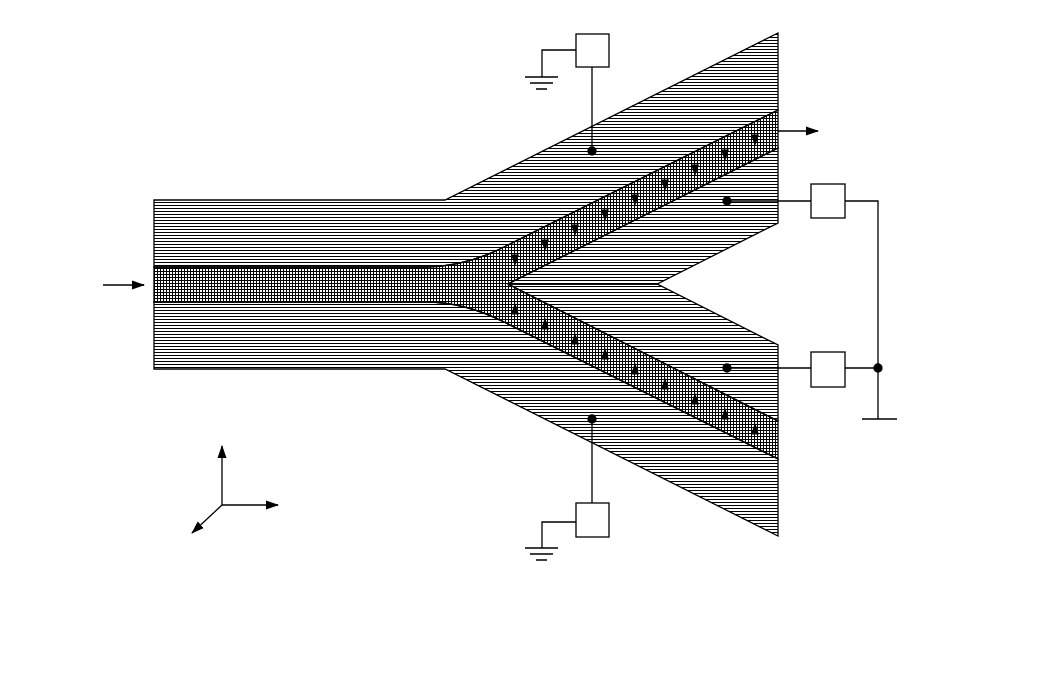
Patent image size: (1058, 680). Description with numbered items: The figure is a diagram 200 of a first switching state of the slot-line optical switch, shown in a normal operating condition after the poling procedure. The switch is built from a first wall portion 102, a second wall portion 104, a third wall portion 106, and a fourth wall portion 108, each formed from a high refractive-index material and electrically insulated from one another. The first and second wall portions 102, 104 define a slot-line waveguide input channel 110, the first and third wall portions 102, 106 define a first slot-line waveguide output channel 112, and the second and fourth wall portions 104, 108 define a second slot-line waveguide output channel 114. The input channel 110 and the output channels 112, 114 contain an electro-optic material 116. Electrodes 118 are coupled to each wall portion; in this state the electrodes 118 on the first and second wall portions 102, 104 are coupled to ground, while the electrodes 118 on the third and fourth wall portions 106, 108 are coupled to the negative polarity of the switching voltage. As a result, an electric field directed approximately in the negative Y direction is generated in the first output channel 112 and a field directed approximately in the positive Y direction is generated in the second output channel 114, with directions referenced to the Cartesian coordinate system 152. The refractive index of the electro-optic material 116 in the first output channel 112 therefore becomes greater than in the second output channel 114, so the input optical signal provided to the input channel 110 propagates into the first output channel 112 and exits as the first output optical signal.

The diagram 200 is at (116, 79).
The slot-line waveguide input channel 110 is at (322, 164).
The first slot-line waveguide output channel 112 is at (523, 129).
The second slot-line waveguide output channel 114 is at (555, 451).
The first wall portion 102 is at (391, 246).
The second wall portion 104 is at (391, 346).
The third wall portion 106 is at (711, 240).
The fourth wall portion 108 is at (711, 355).
The electro-optic material 116 is at (340, 296).
The electrodes 118 is at (576, 34).
The Cartesian coordinate system 152 is at (184, 466).